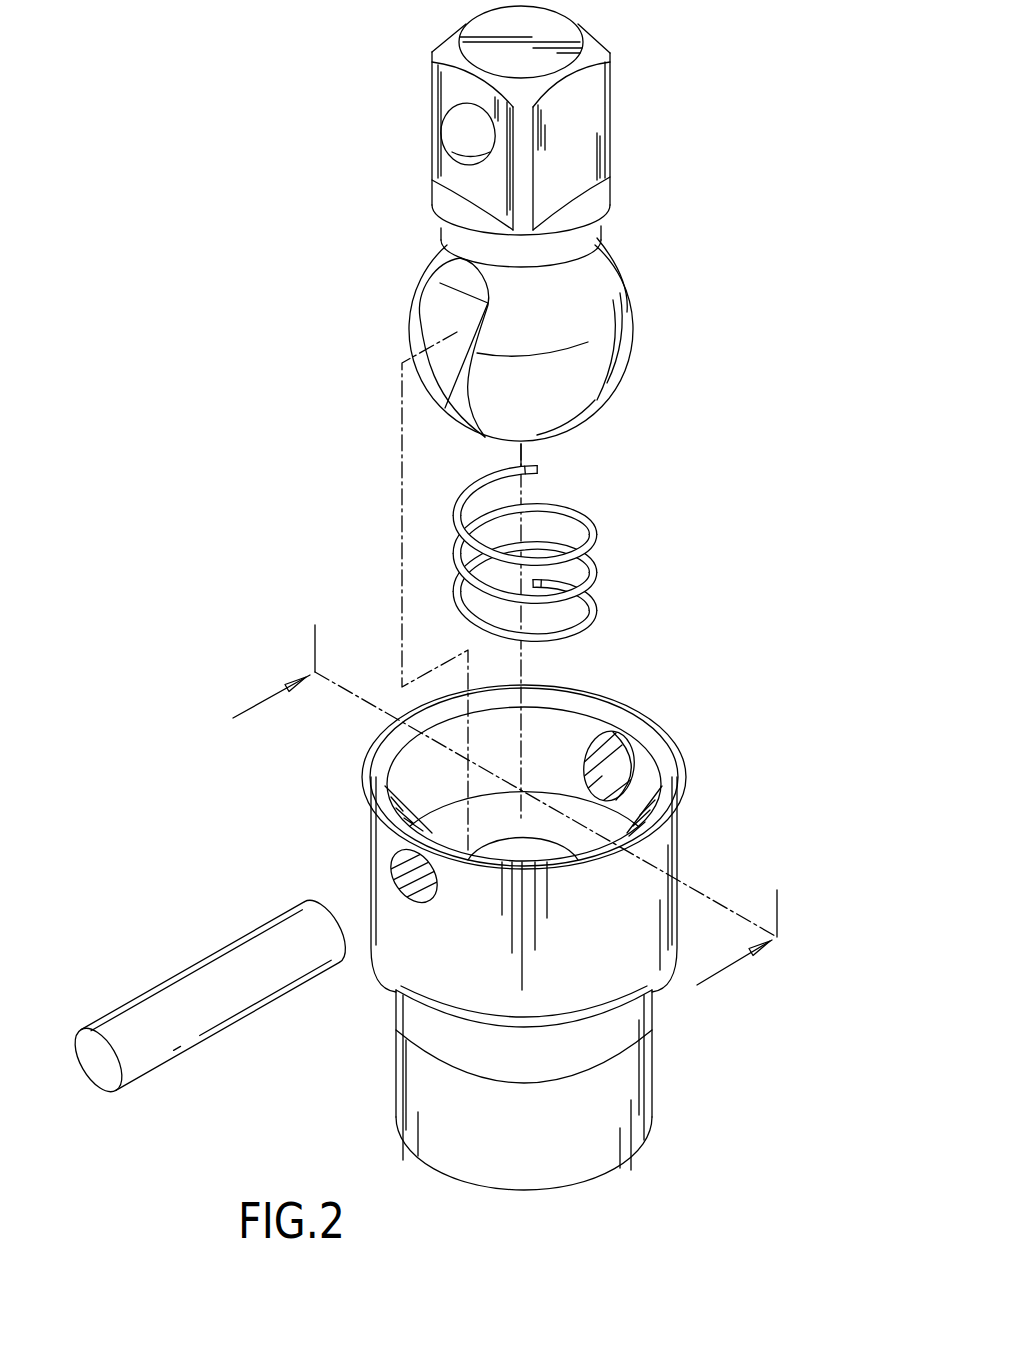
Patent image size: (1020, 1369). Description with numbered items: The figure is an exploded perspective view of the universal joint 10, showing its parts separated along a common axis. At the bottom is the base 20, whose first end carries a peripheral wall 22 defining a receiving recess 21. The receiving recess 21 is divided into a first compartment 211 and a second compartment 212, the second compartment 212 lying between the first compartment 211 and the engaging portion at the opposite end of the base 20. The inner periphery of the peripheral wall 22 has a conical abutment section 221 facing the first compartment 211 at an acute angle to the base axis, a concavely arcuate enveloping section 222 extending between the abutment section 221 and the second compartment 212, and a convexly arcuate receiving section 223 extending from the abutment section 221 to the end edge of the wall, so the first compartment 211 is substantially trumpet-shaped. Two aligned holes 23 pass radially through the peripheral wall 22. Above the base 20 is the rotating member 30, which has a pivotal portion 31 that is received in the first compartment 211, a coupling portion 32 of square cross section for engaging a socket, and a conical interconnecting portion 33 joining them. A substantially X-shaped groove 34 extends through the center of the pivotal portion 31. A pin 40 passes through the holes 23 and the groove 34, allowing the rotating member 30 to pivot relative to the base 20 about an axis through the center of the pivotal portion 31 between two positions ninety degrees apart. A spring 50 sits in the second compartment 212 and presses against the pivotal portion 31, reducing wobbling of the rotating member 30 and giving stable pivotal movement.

The universal joint 10 is at (224, 232).
The base 20 is at (376, 1103).
The receiving recess 21 is at (782, 686).
The first compartment 211 is at (565, 743).
The second compartment 212 is at (553, 847).
The peripheral wall 22 is at (430, 972).
The abutment section 221 is at (420, 796).
The enveloping section 222 is at (441, 832).
The receiving section 223 is at (390, 750).
The holes 23 is at (393, 875).
The rotating member 30 is at (415, 152).
The pivotal portion 31 is at (593, 400).
The coupling portion 32 is at (480, 28).
The interconnecting portion 33 is at (602, 272).
The groove 34 is at (440, 320).
The pin 40 is at (212, 977).
The spring 50 is at (590, 540).